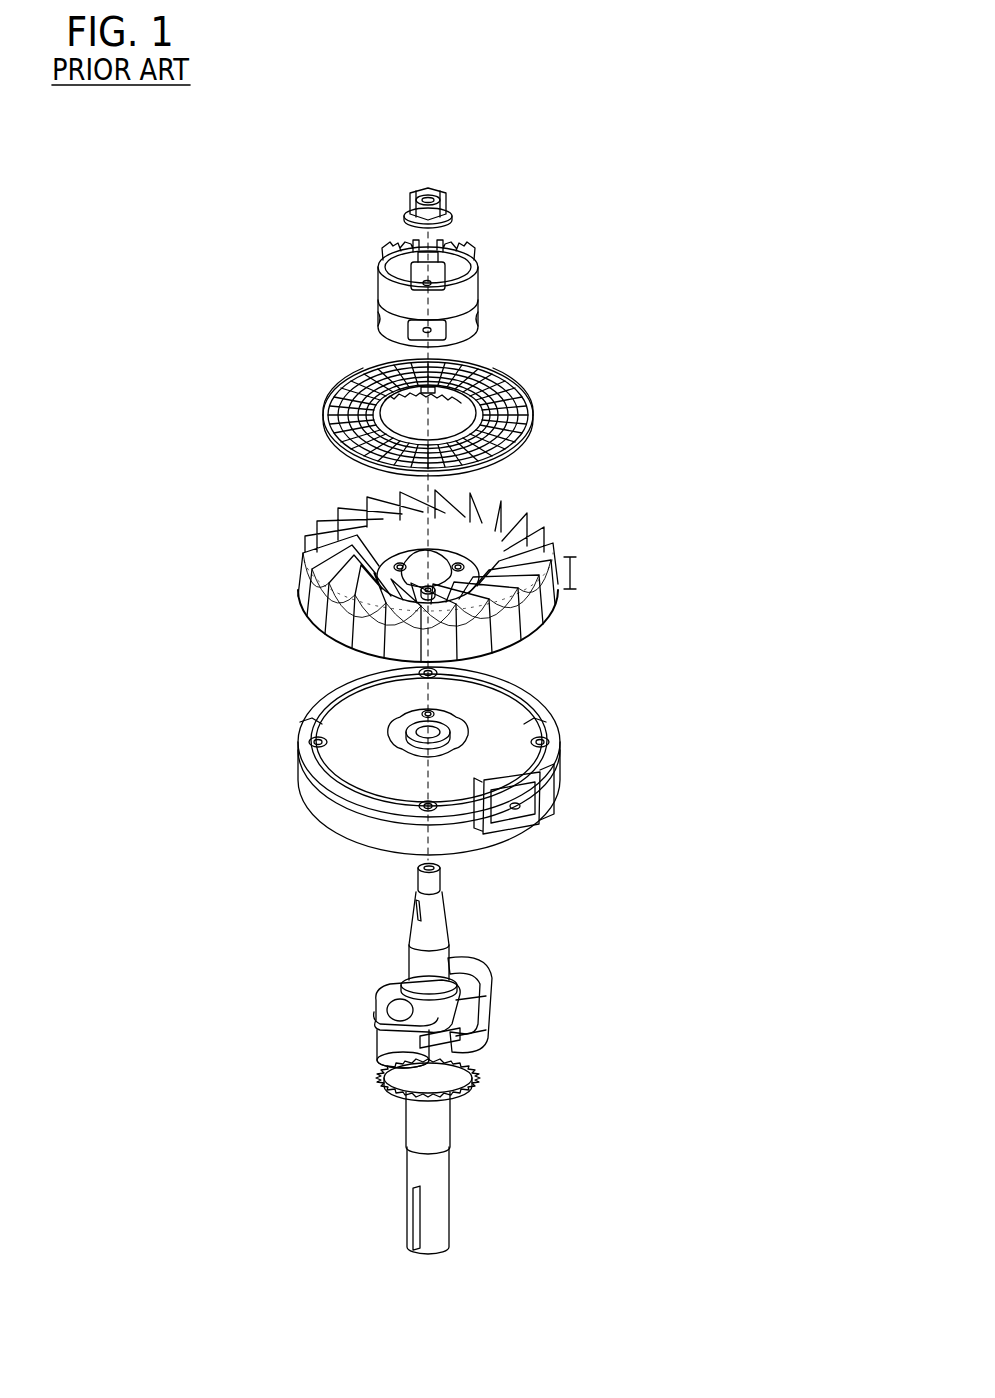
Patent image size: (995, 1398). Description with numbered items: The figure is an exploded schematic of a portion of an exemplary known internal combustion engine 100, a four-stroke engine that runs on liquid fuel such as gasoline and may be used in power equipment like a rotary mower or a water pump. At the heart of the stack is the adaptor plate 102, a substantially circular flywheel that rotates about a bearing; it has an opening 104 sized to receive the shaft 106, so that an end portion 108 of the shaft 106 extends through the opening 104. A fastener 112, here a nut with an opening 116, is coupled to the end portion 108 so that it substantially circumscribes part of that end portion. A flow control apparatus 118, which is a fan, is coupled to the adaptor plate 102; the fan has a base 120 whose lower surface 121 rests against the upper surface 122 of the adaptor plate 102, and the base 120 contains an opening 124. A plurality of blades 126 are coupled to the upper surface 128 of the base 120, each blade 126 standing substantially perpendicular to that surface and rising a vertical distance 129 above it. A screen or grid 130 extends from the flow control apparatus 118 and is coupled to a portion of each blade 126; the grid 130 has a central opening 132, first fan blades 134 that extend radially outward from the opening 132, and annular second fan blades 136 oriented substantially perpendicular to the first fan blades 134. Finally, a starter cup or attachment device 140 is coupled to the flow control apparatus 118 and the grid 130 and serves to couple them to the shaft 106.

The internal combustion engine 100 is at (586, 117).
The adaptor plate 102 is at (429, 782).
The opening 104 is at (417, 730).
The shaft 106 is at (413, 1056).
The end portion 108 is at (452, 877).
The fastener 112 is at (452, 195).
The opening 116 is at (427, 192).
The flow control apparatus 118 is at (416, 588).
The base 120 is at (445, 535).
The lower surface 121 is at (522, 652).
The upper surface 122 is at (480, 768).
The opening 124 is at (410, 562).
The blades 126 is at (318, 566).
The upper surface 128 is at (542, 627).
The vertical distance 129 is at (575, 573).
The grid 130 is at (428, 393).
The opening 132 is at (418, 408).
The first fan blades 134 is at (333, 388).
The second fan blades 136 is at (524, 397).
The attachment device 140 is at (378, 270).